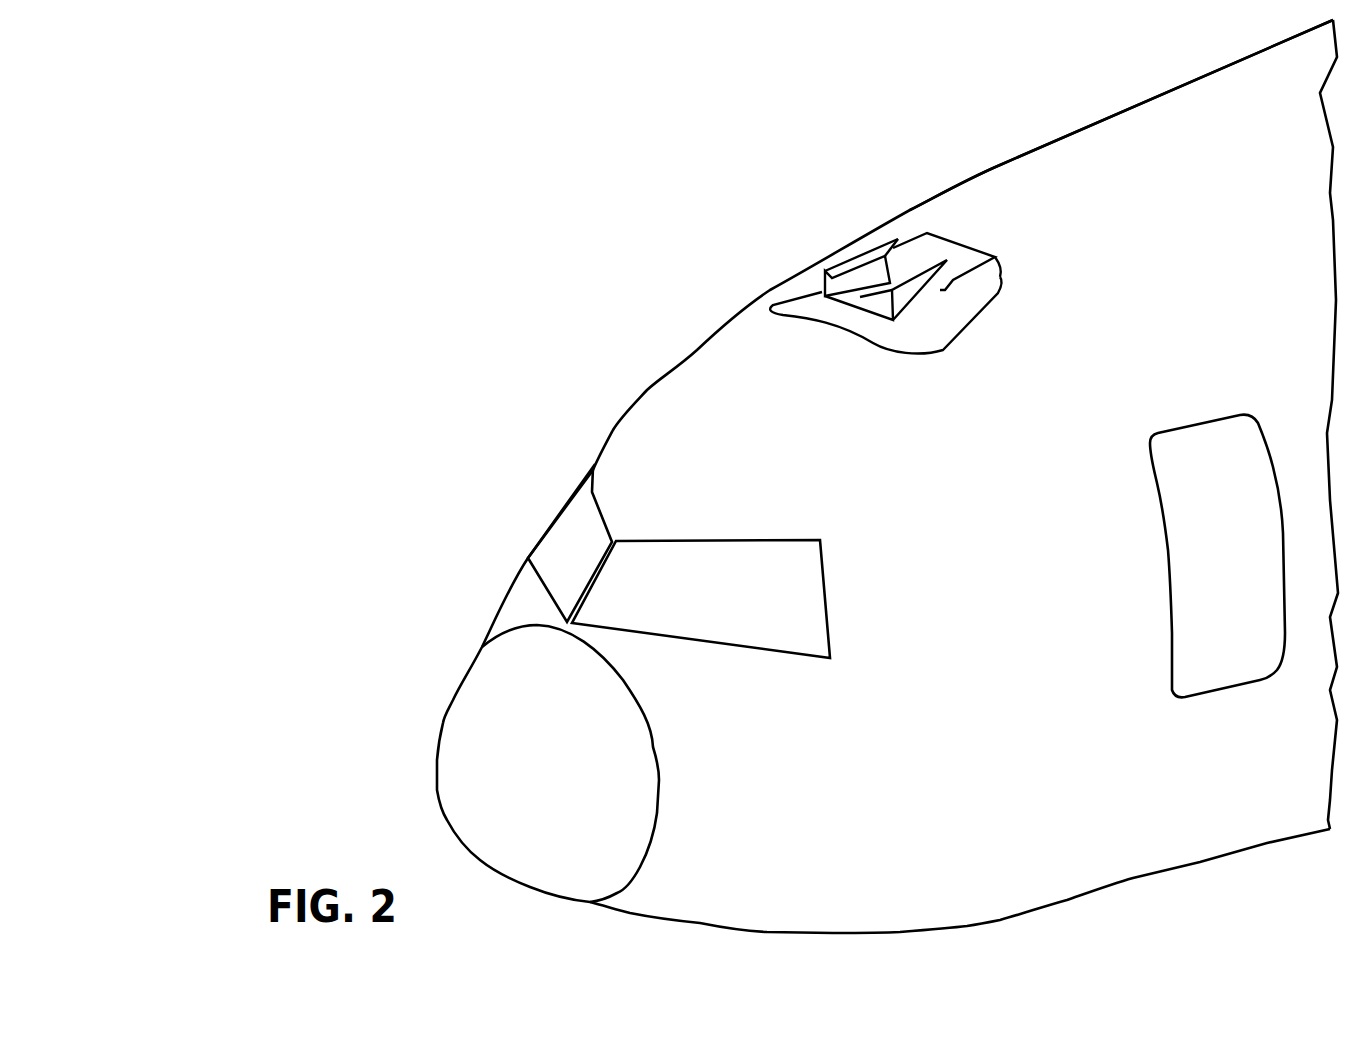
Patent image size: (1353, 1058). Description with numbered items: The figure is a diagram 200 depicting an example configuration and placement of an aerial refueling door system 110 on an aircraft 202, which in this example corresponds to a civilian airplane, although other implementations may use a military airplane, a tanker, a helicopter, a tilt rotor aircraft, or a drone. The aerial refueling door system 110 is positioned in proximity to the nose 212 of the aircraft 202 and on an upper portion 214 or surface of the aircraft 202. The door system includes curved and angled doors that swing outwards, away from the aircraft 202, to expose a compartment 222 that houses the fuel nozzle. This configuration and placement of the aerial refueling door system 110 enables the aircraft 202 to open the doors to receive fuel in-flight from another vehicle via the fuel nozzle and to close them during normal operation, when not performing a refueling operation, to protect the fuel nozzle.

The diagram 200 is at (265, 100).
The aircraft 202 is at (570, 198).
The upper portion 214 is at (1097, 132).
The nose 212 is at (450, 778).
The aerial refueling door system 110 is at (827, 275).
The compartment 222 is at (870, 307).